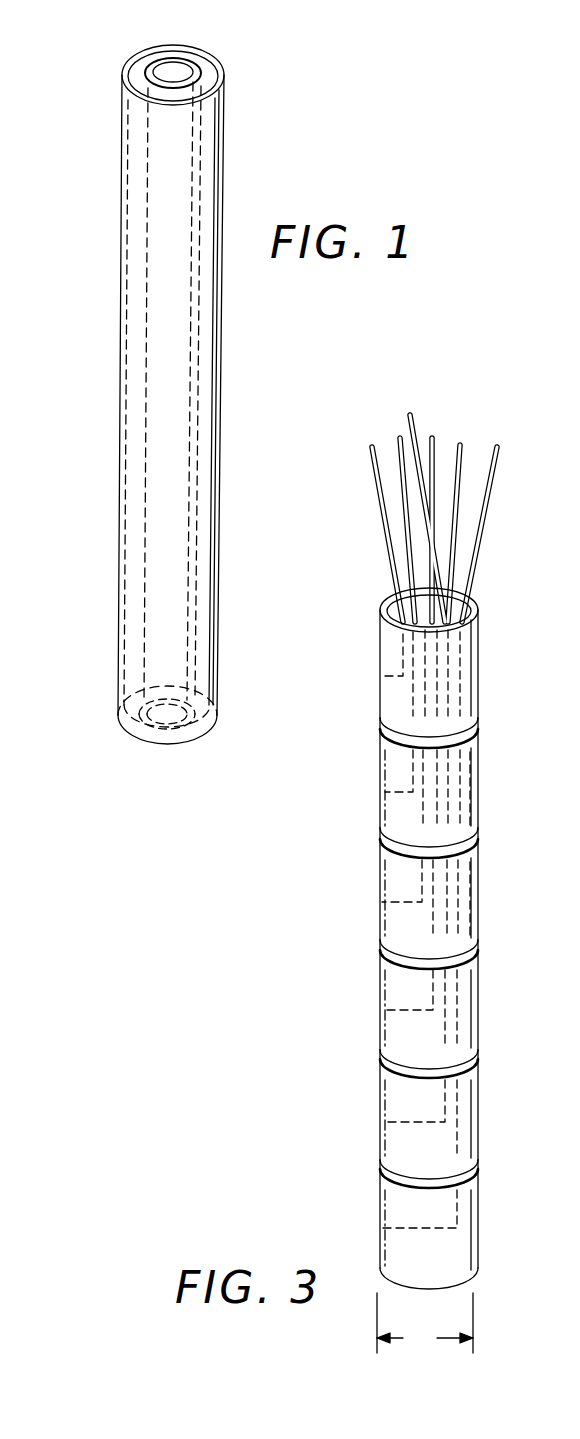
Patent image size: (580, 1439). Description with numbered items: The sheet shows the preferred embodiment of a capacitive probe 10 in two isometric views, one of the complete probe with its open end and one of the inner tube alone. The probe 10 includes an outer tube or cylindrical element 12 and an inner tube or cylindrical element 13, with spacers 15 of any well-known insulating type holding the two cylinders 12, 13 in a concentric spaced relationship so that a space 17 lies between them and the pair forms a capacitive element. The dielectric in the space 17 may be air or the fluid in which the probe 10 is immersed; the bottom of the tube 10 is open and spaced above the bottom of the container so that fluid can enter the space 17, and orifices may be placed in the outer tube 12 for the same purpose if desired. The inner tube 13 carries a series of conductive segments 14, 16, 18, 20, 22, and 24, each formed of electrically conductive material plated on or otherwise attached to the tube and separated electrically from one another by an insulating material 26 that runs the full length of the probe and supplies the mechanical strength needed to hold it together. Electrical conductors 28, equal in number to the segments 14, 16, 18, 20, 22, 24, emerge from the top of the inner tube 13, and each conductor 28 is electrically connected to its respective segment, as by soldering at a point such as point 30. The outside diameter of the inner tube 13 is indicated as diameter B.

In FIG. 1, the capacitive probe 10 is at (100, 172).
In FIG. 1, the outer tube 12 is at (120, 383).
In FIG. 1, the inner tube 13 is at (200, 52).
In FIG. 3, the inner tube 13 is at (326, 983).
In FIG. 1, the spacers 15 is at (162, 50).
In FIG. 1, the space 17 is at (220, 63).
In FIG. 3, the segment 14 is at (480, 652).
In FIG. 3, the segment 16 is at (473, 783).
In FIG. 3, the segment 18 is at (475, 887).
In FIG. 3, the segment 20 is at (477, 997).
In FIG. 3, the segment 22 is at (477, 1108).
In FIG. 3, the segment 24 is at (475, 1212).
In FIG. 3, the insulating material 26 is at (400, 748).
In FIG. 3, the electrical conductors 28 is at (460, 466).
In FIG. 3, the point 30 is at (390, 792).